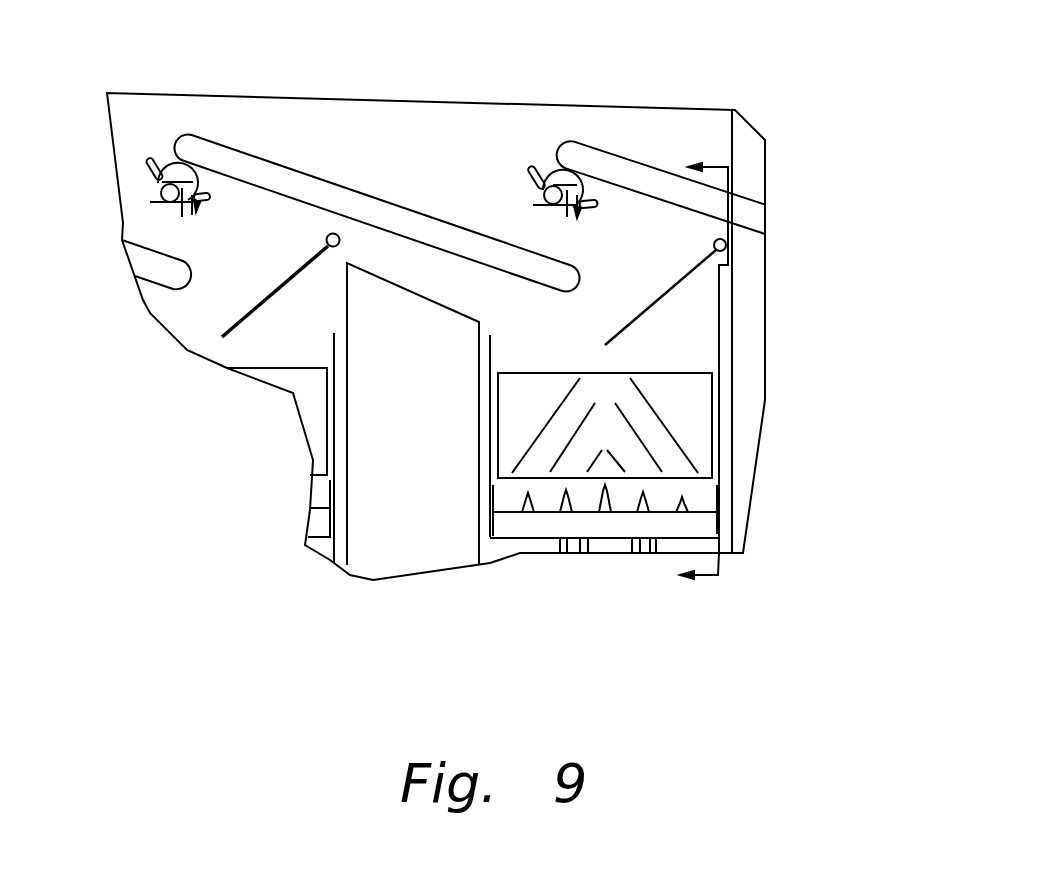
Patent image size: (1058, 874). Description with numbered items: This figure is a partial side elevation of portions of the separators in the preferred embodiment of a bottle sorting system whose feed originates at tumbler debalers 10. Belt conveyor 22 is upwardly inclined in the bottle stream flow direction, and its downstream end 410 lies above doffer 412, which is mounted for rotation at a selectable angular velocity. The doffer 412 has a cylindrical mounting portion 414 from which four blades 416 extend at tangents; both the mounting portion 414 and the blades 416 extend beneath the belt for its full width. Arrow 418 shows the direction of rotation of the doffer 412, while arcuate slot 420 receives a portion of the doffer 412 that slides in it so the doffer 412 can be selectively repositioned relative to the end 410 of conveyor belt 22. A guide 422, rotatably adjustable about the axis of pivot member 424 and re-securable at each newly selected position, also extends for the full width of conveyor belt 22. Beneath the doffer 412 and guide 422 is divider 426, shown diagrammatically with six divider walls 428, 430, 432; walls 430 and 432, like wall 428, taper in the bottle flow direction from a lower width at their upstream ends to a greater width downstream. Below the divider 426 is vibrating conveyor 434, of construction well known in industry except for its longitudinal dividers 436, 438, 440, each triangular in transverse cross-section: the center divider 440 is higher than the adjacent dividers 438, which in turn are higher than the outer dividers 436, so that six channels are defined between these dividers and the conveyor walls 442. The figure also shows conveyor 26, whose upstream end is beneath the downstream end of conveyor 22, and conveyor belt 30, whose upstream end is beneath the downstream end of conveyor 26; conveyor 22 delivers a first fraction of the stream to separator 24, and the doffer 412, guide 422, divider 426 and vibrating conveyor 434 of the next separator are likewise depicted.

The tumbler debaler 10 is at (697, 373).
The belt conveyor 22 is at (613, 147).
The separator 24 is at (652, 126).
The conveyor 26 is at (318, 178).
The conveyor belt 30 is at (162, 273).
The downstream end 410 is at (565, 148).
The doffer 412 is at (164, 140).
The mounting portion 414 is at (547, 200).
The blades 416 is at (547, 208).
The arrow 418 is at (555, 168).
The arcuate slot 420 is at (590, 208).
The guide 422 is at (215, 297).
The pivot member 424 is at (724, 242).
The divider 426 is at (313, 420).
The divider wall 428 is at (555, 412).
The divider wall 430 is at (565, 440).
The divider wall 432 is at (583, 463).
The vibrating conveyor 434 is at (317, 527).
The outer dividers 436 is at (619, 579).
The adjacent dividers 438 is at (566, 512).
The center divider 440 is at (593, 513).
The conveyor walls 442 is at (490, 500).